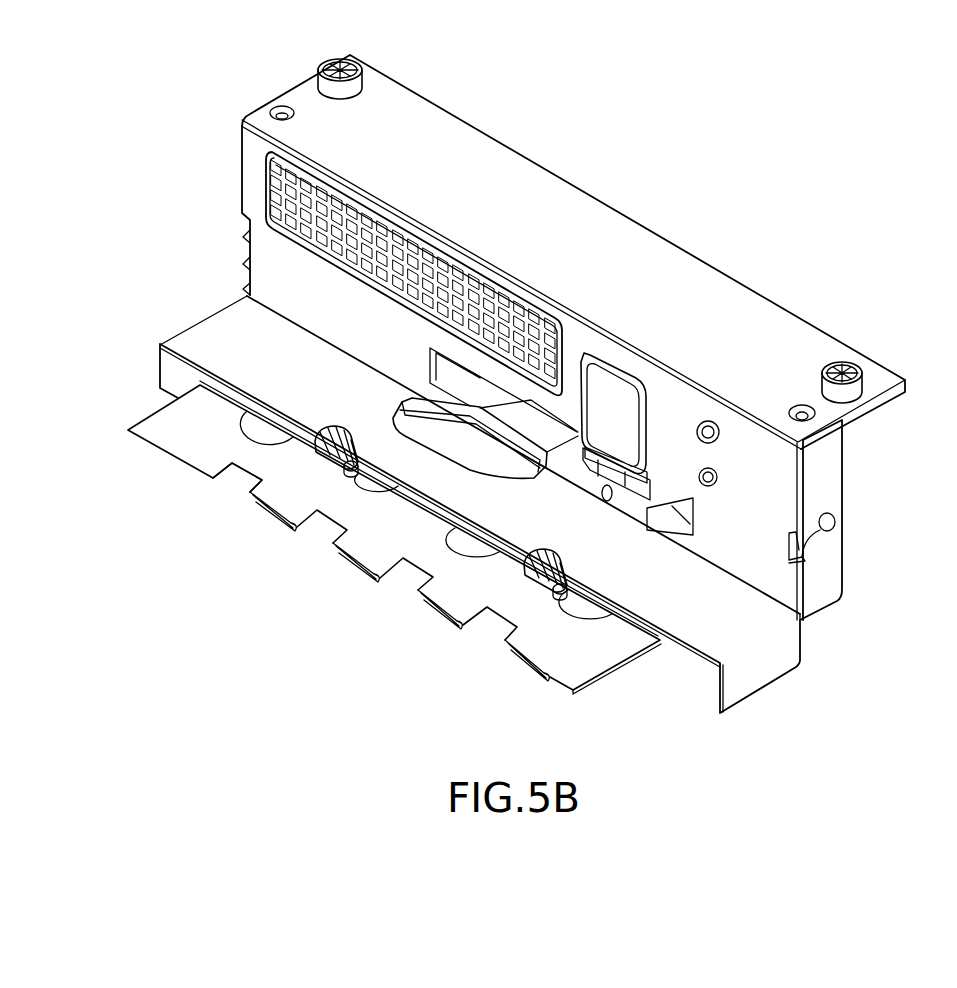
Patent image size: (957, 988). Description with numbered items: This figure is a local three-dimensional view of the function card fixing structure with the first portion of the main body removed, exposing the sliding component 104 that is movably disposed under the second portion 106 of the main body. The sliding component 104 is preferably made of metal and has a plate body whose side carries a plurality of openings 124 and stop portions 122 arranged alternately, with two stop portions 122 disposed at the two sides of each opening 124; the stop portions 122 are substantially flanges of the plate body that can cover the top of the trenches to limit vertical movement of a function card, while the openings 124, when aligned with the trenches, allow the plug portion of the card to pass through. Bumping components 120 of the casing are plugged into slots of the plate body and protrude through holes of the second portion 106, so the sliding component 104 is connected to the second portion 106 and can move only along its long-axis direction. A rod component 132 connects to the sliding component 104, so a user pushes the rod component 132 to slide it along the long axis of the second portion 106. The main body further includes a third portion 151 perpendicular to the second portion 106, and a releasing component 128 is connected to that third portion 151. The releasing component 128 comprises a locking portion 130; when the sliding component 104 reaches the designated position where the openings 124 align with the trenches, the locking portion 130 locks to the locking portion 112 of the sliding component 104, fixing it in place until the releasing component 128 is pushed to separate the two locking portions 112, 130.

The sliding component 104 is at (412, 573).
The second portion 106 is at (733, 637).
The locking portion 112 is at (695, 537).
The bumping component 120 is at (523, 555).
The stop portion 122 is at (262, 505).
The opening 124 is at (235, 483).
The releasing component 128 is at (603, 384).
The locking portion 130 is at (637, 480).
The rod component 132 is at (380, 405).
The third portion 151 is at (778, 476).